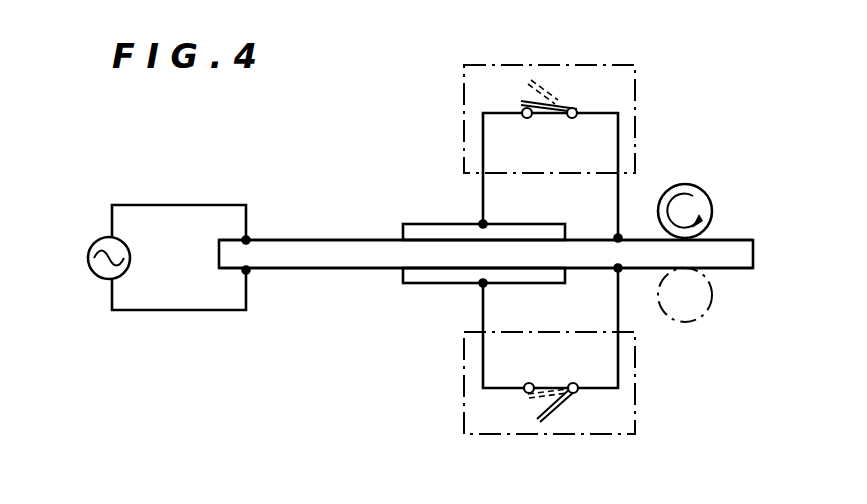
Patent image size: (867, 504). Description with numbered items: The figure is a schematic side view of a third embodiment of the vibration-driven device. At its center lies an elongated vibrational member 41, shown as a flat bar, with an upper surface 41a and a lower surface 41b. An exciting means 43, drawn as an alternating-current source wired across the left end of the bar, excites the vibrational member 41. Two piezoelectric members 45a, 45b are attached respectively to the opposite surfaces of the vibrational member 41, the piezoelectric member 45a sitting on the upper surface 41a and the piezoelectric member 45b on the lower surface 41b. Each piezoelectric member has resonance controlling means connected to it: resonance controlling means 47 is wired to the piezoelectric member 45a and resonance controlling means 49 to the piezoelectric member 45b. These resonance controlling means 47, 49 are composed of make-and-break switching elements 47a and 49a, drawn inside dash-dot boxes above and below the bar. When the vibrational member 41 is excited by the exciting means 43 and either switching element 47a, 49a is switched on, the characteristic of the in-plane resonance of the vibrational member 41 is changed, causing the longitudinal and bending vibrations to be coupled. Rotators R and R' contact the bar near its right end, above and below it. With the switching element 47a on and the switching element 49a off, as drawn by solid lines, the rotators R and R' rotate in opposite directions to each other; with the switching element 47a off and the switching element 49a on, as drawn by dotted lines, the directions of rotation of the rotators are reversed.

The vibrational member 41 is at (337, 253).
The upper surface of plate 41a is at (287, 238).
The lower surface of plate 41b is at (284, 272).
The exciting means 43 is at (98, 238).
The piezoelectric member 45a is at (432, 230).
The piezoelectric member 45b is at (432, 283).
The resonance controlling means 47 is at (595, 150).
The switching element 47a is at (548, 117).
The resonance controlling means 49 is at (595, 350).
The switching element 49a is at (550, 390).
The rotator R is at (705, 194).
The rotator R' is at (712, 311).